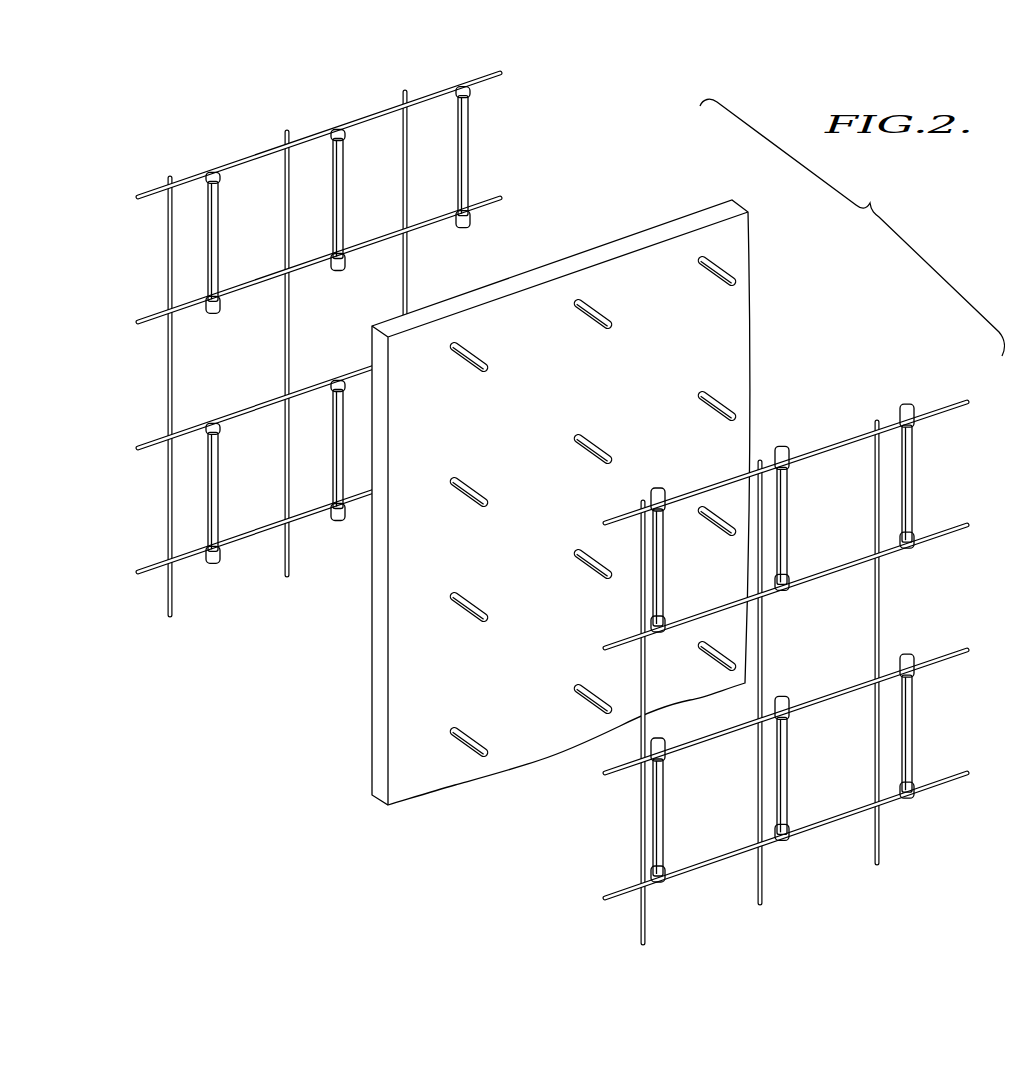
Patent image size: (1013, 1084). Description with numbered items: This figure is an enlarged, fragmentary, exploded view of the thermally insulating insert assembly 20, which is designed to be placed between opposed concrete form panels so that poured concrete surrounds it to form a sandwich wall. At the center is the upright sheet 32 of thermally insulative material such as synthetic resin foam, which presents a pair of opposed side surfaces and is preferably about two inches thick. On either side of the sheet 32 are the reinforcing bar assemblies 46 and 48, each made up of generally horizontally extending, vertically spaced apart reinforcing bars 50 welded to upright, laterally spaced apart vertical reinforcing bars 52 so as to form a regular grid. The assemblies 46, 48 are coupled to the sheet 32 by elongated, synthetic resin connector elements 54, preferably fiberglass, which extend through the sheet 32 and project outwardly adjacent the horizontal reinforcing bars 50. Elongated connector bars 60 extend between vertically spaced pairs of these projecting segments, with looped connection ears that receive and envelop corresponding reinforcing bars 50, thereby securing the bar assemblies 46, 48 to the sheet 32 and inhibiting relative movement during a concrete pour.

The insert assembly 20 is at (638, 188).
The sheet 32 is at (538, 522).
The reinforcing bar assembly 46 is at (965, 404).
The reinforcing bar assembly 48 is at (326, 373).
The horizontally extending reinforcing bars 50 is at (148, 203).
The vertical reinforcing bars 52 is at (287, 558).
The connector elements 54 is at (724, 263).
The connector bars 60 is at (478, 156).